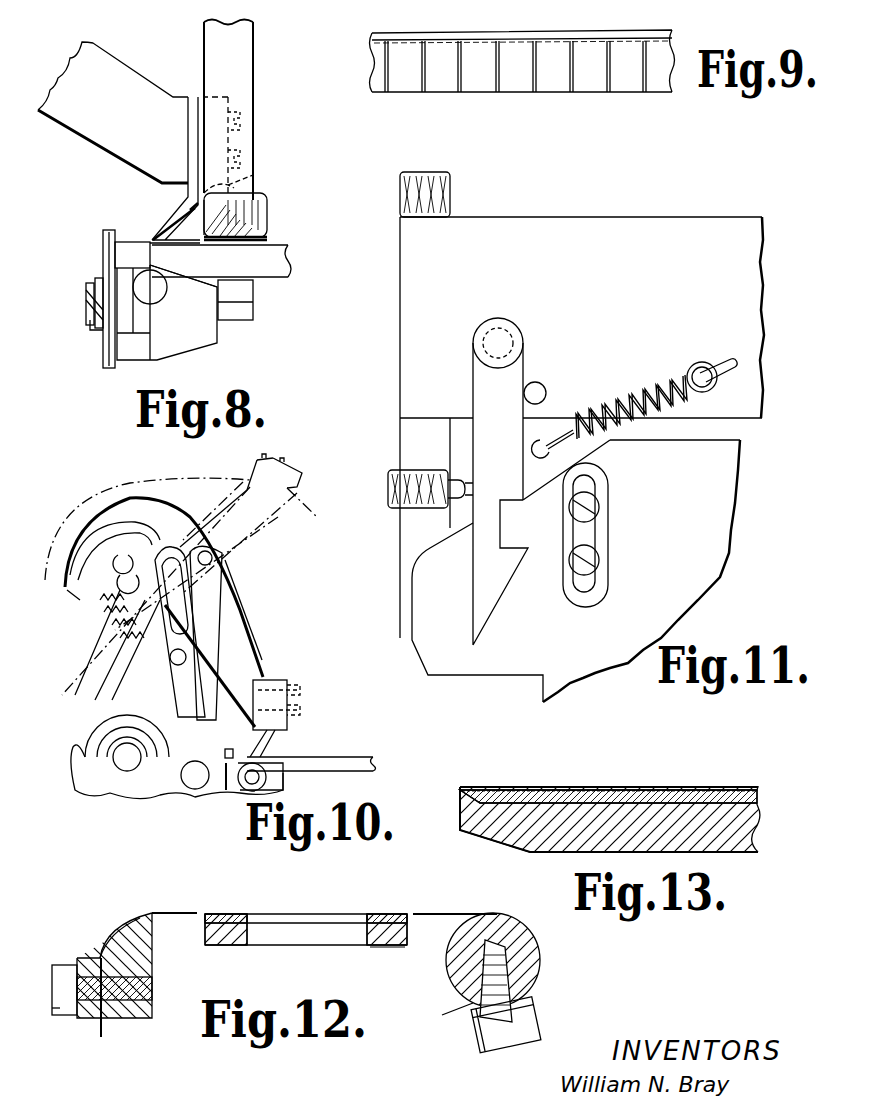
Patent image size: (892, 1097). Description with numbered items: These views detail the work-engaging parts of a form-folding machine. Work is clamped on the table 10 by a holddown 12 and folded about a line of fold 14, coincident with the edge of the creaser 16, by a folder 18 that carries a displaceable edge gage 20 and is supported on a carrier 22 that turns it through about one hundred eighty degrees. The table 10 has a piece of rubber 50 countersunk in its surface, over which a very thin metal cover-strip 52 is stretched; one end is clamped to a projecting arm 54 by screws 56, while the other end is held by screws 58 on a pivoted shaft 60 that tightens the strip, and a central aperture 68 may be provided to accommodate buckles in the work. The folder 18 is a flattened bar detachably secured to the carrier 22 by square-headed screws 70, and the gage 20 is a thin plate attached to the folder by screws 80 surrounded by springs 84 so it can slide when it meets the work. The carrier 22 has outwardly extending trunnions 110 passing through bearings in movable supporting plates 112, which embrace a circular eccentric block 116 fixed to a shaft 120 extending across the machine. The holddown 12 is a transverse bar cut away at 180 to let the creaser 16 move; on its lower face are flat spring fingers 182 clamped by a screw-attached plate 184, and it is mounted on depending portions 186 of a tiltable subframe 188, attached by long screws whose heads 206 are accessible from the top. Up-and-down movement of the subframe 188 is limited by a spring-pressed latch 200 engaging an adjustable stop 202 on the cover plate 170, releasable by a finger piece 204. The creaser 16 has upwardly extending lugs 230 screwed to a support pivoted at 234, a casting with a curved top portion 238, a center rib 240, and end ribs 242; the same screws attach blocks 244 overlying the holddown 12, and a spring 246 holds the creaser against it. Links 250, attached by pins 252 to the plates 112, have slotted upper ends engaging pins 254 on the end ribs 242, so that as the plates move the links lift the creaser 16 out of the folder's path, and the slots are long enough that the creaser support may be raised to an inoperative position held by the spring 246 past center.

In FIG. 8, the table 10 is at (280, 262).
In FIG. 10, the table 10 is at (350, 762).
In FIG. 13, the table 10 is at (740, 822).
In FIG. 8, the holddown 12 is at (232, 198).
In FIG. 9, the holddown 12 is at (672, 45).
In FIG. 8, the line of fold 14 is at (152, 242).
In FIG. 8, the creaser 16 is at (180, 213).
In FIG. 10, the creaser 16 is at (268, 745).
In FIG. 8, the folder 18 is at (128, 255).
In FIG. 10, the folder 18 is at (232, 750).
In FIG. 8, the edge gage 20 is at (105, 265).
In FIG. 8, the carrier 22 is at (210, 330).
In FIG. 12, the rubber 50 is at (377, 914).
In FIG. 13, the rubber 50 is at (600, 790).
In FIG. 12, the metal cover-strip 52 is at (170, 913).
In FIG. 13, the metal cover-strip 52 is at (520, 787).
In FIG. 12, the projecting arm 54 is at (135, 948).
In FIG. 12, the screws 56 is at (58, 978).
In FIG. 12, the screws 58 is at (482, 1040).
In FIG. 12, the shaft 60 is at (515, 942).
In FIG. 12, the central aperture 68 is at (248, 935).
In FIG. 8, the square-headed screws 70 is at (245, 290).
In FIG. 12, the square-headed screws 70 is at (385, 947).
In FIG. 8, the screws 80 is at (86, 303).
In FIG. 8, the springs 84 is at (90, 325).
In FIG. 8, the trunnions 110 is at (157, 290).
In FIG. 10, the trunnions 110 is at (265, 780).
In FIG. 10, the supporting plates 112 is at (230, 783).
In FIG. 10, the eccentric block 116 is at (150, 785).
In FIG. 10, the shaft 120 is at (120, 768).
In FIG. 11, the cover plate 170 is at (720, 495).
In FIG. 8, the cut-away 180 is at (235, 195).
In FIG. 8, the flat spring fingers 182 is at (245, 240).
In FIG. 9, the flat spring fingers 182 is at (500, 110).
In FIG. 8, the screw-attached plate 184 is at (255, 237).
In FIG. 9, the screw-attached plate 184 is at (545, 31).
In FIG. 8, the depending portions 186 is at (253, 38).
In FIG. 11, the depending portions 186 is at (420, 535).
In FIG. 11, the tiltable subframe 188 is at (578, 222).
In FIG. 11, the spring-pressed latch 200 is at (488, 385).
In FIG. 11, the stop 202 is at (540, 540).
In FIG. 11, the finger piece 204 is at (425, 482).
In FIG. 11, the screw heads 206 is at (450, 185).
In FIG. 8, the upwardly extending lugs 230 is at (193, 118).
In FIG. 10, the upwardly extending lugs 230 is at (77, 537).
In FIG. 10, the pivot 234 is at (110, 608).
In FIG. 10, the curved top portion 238 is at (135, 485).
In FIG. 10, the center rib 240 is at (237, 642).
In FIG. 8, the end ribs 242 is at (115, 70).
In FIG. 10, the end ribs 242 is at (235, 690).
In FIG. 8, the blocks 244 is at (240, 182).
In FIG. 10, the blocks 244 is at (280, 722).
In FIG. 10, the spring 246 is at (187, 640).
In FIG. 10, the links 250 is at (170, 705).
In FIG. 10, the pins 252 is at (197, 790).
In FIG. 10, the pins 254 is at (178, 630).